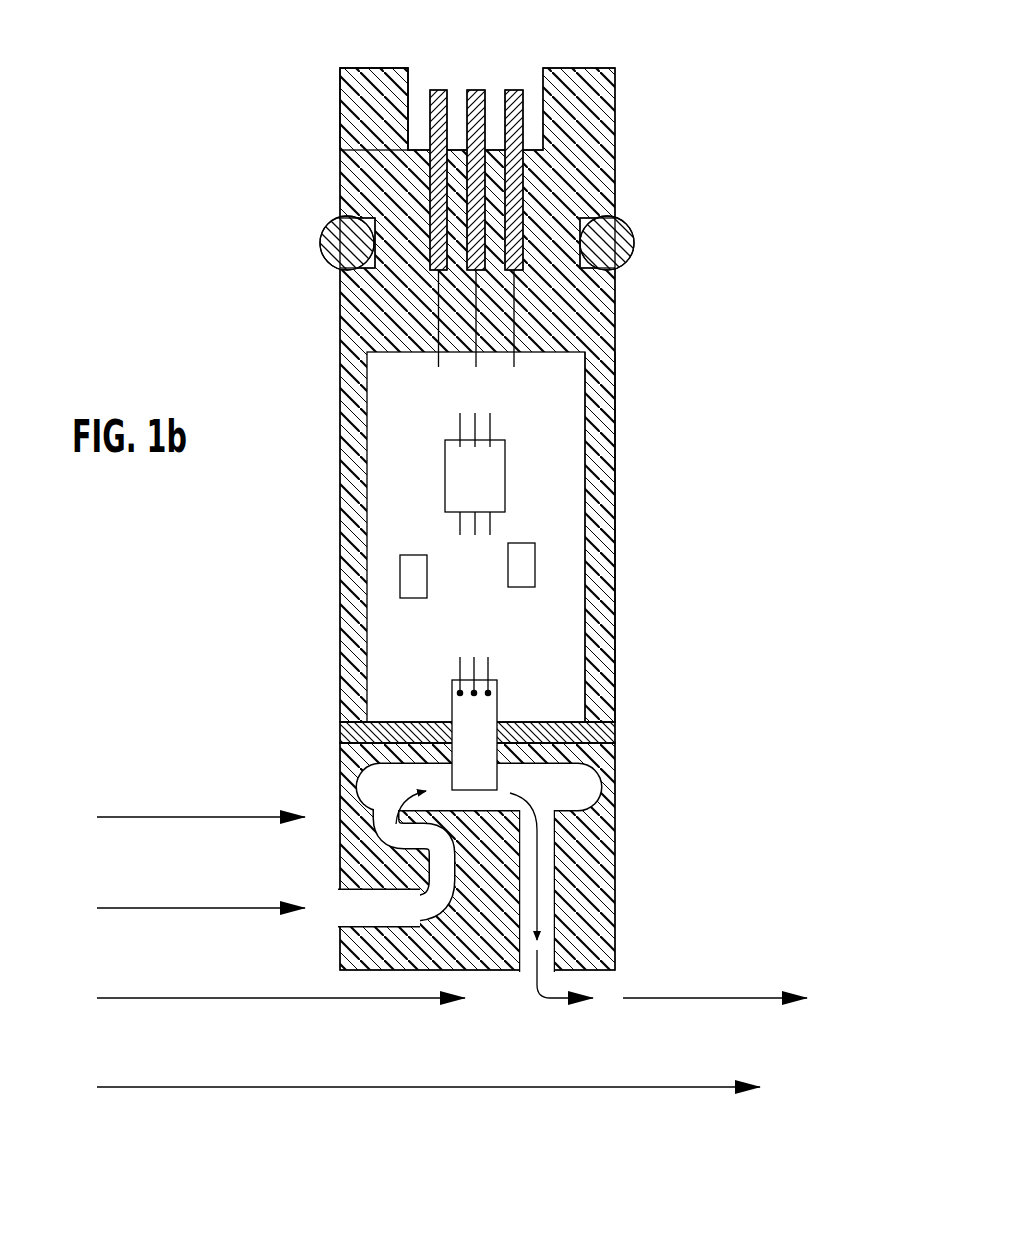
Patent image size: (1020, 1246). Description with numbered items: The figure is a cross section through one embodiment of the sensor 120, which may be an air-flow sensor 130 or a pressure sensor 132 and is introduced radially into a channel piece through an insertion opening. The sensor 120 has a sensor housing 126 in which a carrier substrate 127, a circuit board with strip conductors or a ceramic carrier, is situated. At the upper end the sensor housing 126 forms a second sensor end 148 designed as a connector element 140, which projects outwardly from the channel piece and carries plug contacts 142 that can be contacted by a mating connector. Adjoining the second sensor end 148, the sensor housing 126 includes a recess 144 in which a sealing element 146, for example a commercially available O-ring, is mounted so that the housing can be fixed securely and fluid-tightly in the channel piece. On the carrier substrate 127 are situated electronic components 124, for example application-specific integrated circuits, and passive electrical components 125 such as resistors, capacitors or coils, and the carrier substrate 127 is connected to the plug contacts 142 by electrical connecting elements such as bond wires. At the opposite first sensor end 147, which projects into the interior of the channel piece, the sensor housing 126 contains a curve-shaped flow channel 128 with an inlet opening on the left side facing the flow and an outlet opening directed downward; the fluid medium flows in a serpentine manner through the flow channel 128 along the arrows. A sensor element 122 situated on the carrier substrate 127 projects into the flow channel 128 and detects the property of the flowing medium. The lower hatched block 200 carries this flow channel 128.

The sensor 120 is at (258, 121).
The air-flow sensor 130 is at (452, 544).
The pressure sensor 132 is at (452, 544).
The connector element 140 is at (643, 68).
The second sensor end 148 is at (374, 68).
The plug contacts 142 is at (513, 108).
The sealing element 146 is at (350, 238).
The recess 144 is at (360, 282).
The sensor housing 126 is at (600, 380).
The carrier substrate 127 is at (533, 632).
The electronic components 124 is at (480, 475).
The passive electrical components 125 is at (520, 565).
The sensor element 122 is at (600, 741).
The flow body 200 is at (640, 743).
The flow channel 128 is at (353, 910).
The first sensor end 147 is at (490, 970).